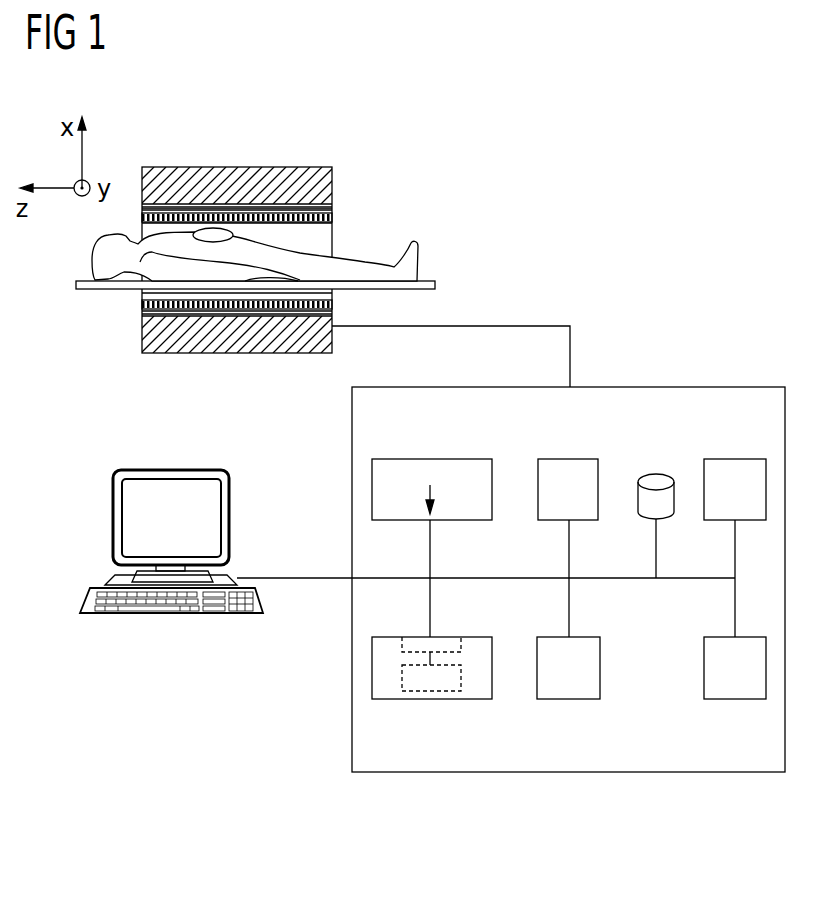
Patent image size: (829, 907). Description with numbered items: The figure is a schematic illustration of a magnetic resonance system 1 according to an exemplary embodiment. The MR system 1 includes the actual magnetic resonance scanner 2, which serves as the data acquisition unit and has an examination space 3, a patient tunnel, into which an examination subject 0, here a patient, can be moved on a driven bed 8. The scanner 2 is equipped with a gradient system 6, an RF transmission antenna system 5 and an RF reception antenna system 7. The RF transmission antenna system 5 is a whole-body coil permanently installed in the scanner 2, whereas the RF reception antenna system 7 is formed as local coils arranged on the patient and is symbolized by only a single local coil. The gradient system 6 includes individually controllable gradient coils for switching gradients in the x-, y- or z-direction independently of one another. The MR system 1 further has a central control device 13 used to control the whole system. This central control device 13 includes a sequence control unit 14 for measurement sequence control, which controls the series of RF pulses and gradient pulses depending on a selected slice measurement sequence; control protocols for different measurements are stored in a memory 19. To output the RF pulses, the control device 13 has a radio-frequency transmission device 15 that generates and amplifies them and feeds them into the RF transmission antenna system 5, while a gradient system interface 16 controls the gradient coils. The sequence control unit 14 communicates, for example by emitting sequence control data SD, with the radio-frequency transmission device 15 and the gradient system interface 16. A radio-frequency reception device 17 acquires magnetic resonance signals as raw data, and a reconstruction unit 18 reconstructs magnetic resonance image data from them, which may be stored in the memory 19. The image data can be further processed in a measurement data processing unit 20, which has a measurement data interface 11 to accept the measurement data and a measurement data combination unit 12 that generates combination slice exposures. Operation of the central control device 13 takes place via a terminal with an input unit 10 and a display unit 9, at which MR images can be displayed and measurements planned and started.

The examination subject 0 is at (393, 270).
The magnetic resonance system 1 is at (628, 150).
The magnetic resonance scanner 2 is at (316, 170).
The examination space 3 is at (320, 237).
The RF transmission antenna system 5 is at (243, 217).
The gradient system 6 is at (282, 205).
The RF reception antenna system 7 is at (212, 233).
The driven bed 8 is at (437, 286).
The display unit 9 is at (172, 470).
The input unit 10 is at (168, 615).
The measurement data interface 11 is at (416, 640).
The measurement data combination unit 12 is at (422, 690).
The central control device 13 is at (650, 387).
The sequence control unit 14 is at (430, 458).
The radio-frequency transmission device 15 is at (569, 458).
The gradient system interface 16 is at (568, 702).
The radio-frequency reception device 17 is at (738, 458).
The reconstruction unit 18 is at (735, 702).
The memory 19 is at (658, 472).
The measurement data processing unit 20 is at (468, 702).
The sequence control data SD is at (432, 492).